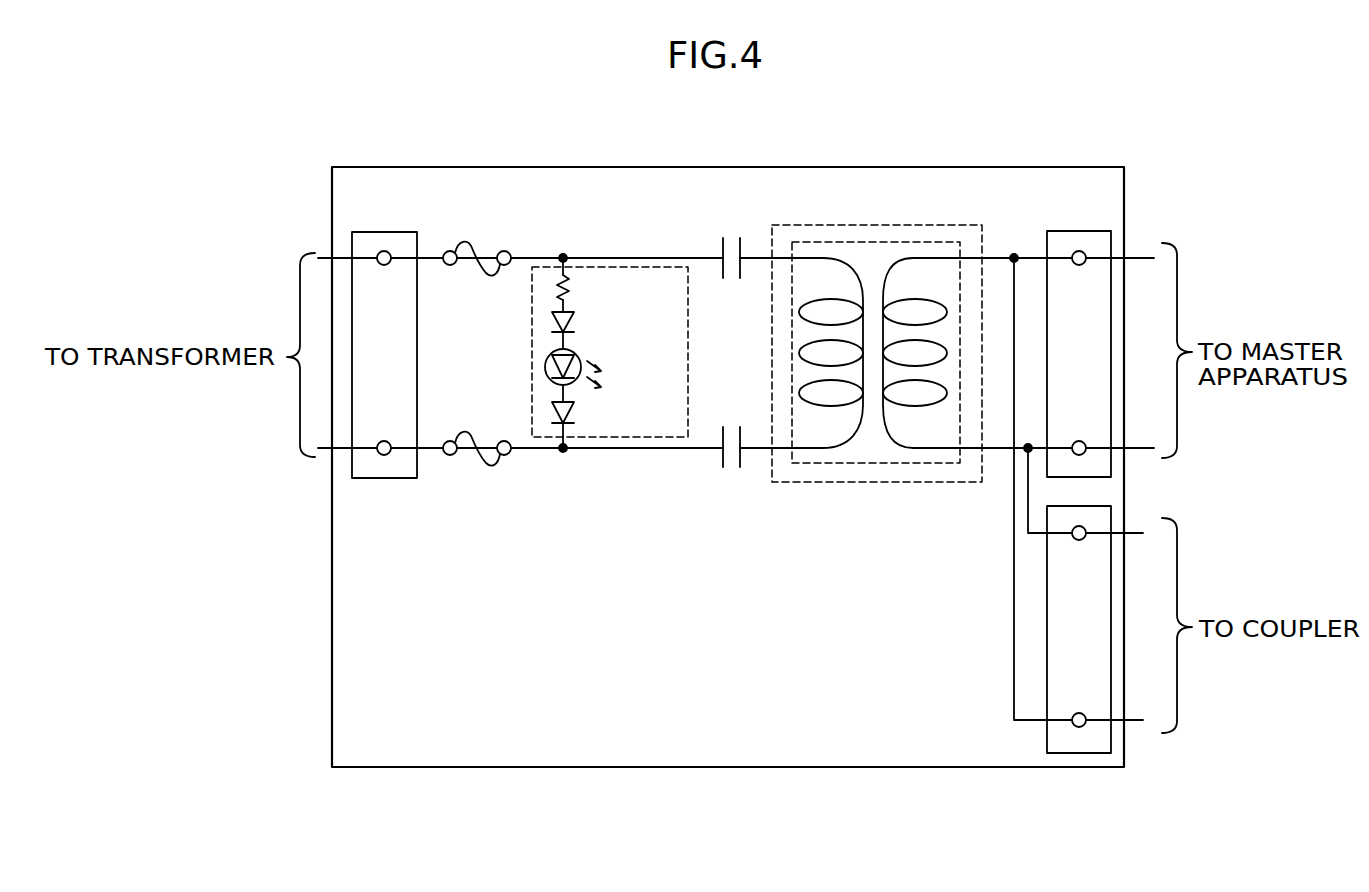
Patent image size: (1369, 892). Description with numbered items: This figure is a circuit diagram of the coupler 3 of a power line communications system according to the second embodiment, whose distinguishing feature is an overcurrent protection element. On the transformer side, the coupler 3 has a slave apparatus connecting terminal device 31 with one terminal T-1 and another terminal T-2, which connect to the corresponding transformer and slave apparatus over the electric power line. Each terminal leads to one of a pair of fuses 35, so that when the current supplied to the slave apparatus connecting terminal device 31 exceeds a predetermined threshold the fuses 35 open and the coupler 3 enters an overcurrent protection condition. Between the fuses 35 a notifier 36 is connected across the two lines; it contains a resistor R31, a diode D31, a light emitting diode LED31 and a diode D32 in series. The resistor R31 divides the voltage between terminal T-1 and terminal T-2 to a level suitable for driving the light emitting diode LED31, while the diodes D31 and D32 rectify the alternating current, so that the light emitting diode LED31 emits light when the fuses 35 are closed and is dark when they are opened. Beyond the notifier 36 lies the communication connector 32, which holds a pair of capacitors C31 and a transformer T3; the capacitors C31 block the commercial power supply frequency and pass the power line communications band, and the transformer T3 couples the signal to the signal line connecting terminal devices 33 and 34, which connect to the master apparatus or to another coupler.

The coupler 3 is at (630, 167).
The slave apparatus connecting terminal device 31 is at (390, 232).
The communication connector 32 is at (822, 225).
The signal line connecting terminal device 33 is at (1068, 231).
The signal line connecting terminal device 34 is at (1078, 753).
The fuse 35 is at (467, 243).
The notifier 36 is at (610, 322).
The capacitor C31 is at (740, 245).
The transformer T3 is at (917, 242).
The resistor R31 is at (593, 288).
The diode D31 is at (592, 325).
The light emitting diode LED31 is at (607, 365).
The diode D32 is at (592, 416).
The terminal T-1 is at (384, 266).
The terminal T-2 is at (384, 441).